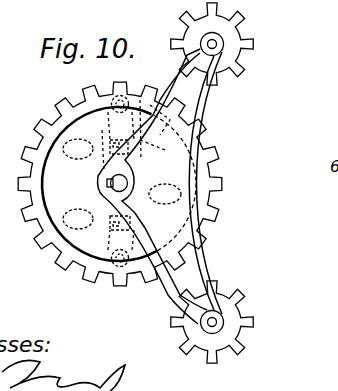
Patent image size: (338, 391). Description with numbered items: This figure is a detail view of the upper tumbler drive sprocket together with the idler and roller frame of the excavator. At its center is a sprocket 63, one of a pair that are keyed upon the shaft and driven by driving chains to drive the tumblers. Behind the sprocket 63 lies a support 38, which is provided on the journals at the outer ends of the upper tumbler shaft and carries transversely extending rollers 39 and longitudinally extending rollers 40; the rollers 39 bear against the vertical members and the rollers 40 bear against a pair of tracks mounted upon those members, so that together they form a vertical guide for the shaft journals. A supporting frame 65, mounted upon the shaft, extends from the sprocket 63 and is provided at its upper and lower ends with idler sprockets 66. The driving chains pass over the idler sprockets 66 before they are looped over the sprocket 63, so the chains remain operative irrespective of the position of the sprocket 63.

The sprocket 63 is at (53, 115).
The support 38 is at (119, 184).
The longitudinally extending roller 40 is at (102, 181).
The transversely extending roller 39 is at (127, 93).
The supporting frame 65 is at (205, 110).
The idler sprocket 66 is at (232, 50).